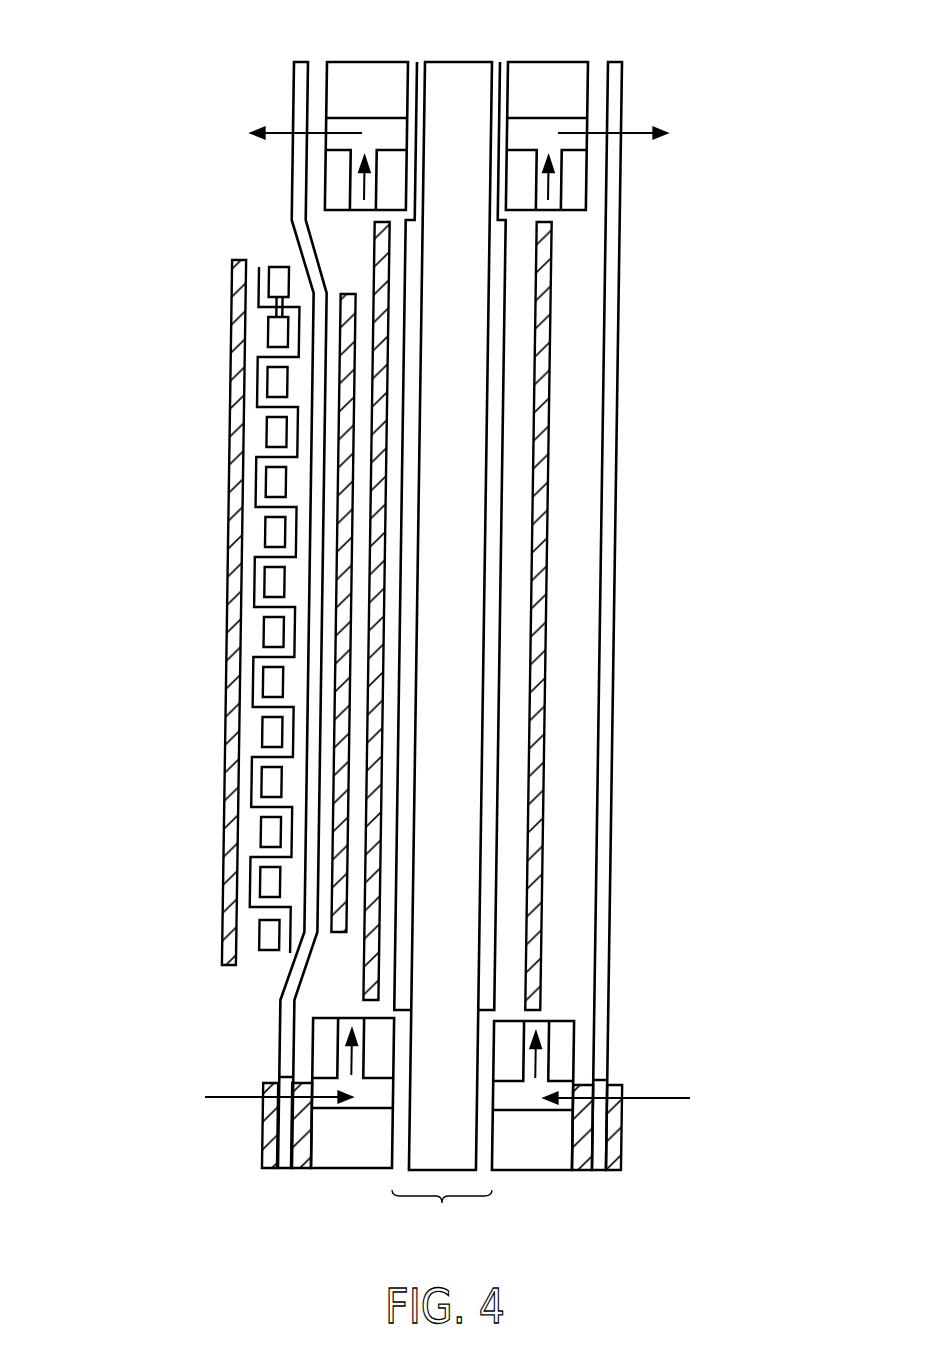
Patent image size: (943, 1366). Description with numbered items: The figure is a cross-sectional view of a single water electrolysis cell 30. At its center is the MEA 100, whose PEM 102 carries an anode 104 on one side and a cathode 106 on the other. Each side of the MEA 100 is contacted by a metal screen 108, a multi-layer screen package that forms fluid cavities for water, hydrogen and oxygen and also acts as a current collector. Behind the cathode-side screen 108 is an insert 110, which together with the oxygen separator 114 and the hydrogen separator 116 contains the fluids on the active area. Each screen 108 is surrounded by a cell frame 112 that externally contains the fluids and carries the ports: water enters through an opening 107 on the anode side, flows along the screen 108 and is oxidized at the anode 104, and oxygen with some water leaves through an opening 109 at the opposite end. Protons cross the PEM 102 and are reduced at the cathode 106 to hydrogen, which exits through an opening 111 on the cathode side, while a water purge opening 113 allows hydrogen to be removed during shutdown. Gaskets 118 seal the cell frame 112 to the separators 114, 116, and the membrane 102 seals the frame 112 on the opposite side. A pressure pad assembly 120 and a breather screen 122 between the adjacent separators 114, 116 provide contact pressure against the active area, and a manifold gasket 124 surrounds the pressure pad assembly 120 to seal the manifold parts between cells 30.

The water electrolysis cell 30 is at (88, 592).
The MEA 100 is at (442, 1214).
The PEM 102 is at (455, 62).
The anode 104 is at (500, 62).
The cathode 106 is at (417, 62).
The opening 107 is at (585, 1103).
The metal screen 108 is at (377, 237).
The opening 109 is at (570, 152).
The insert 110 is at (338, 603).
The opening 111 is at (333, 128).
The cell frame 112 is at (342, 1160).
The water purge opening 113 is at (300, 1100).
The oxygen separator 114 is at (602, 653).
The hydrogen separator 116 is at (290, 995).
The gasket 118 is at (298, 1170).
The pressure pad assembly 120 is at (273, 532).
The breather screen 122 is at (232, 417).
The manifold gasket 124 is at (266, 1150).